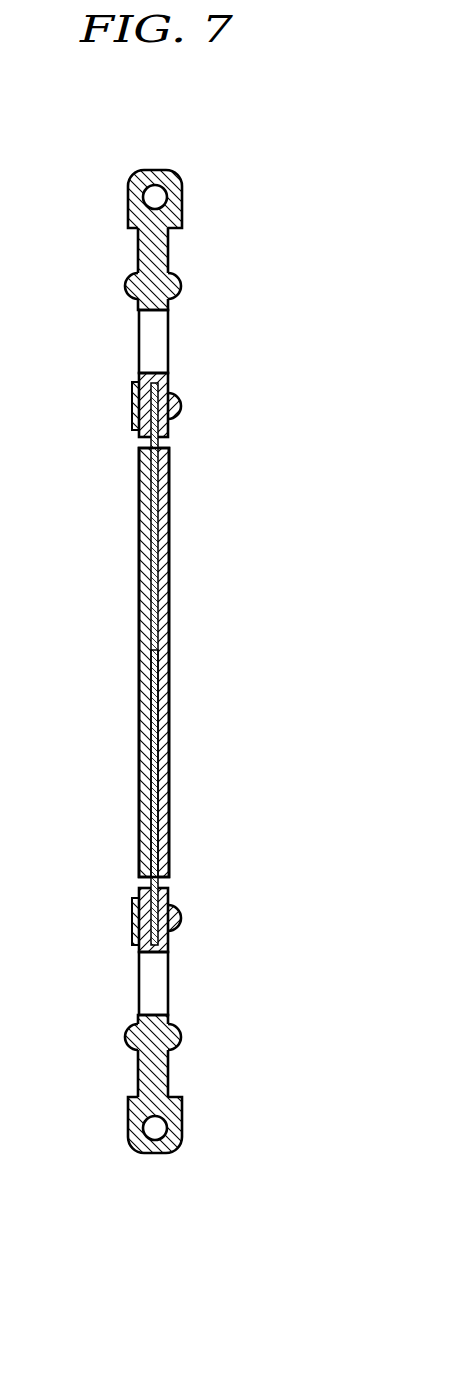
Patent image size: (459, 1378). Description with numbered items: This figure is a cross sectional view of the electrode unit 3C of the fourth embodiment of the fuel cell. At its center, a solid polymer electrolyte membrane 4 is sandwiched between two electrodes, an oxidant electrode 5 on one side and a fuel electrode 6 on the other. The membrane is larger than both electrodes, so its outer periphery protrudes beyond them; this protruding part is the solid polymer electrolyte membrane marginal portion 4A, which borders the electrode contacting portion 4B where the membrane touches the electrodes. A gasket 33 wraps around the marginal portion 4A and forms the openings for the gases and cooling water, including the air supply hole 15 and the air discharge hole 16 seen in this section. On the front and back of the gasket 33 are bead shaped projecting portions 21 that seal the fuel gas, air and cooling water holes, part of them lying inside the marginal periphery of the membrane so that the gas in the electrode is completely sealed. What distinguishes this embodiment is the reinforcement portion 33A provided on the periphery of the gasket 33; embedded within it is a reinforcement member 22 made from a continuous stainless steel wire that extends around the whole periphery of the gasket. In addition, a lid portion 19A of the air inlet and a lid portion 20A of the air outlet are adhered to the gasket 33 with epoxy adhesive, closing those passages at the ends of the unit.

The electrode unit 3C is at (124, 782).
The solid polymer electrolyte membrane 4 is at (155, 590).
The solid polymer electrolyte membrane marginal portion 4A is at (157, 413).
The electrode contacting portion 4B is at (158, 712).
The oxidant electrode 5 is at (147, 652).
The fuel electrode 6 is at (163, 648).
The air supply hole 15 is at (162, 352).
The air discharge hole 16 is at (163, 983).
The lid portion of air inlet 19A is at (135, 388).
The lid portion of air outlet 20A is at (135, 900).
The projecting portion 21 is at (132, 282).
The reinforcement member 22 is at (153, 198).
The gasket 33 is at (158, 253).
The reinforcement portion 33A is at (138, 212).